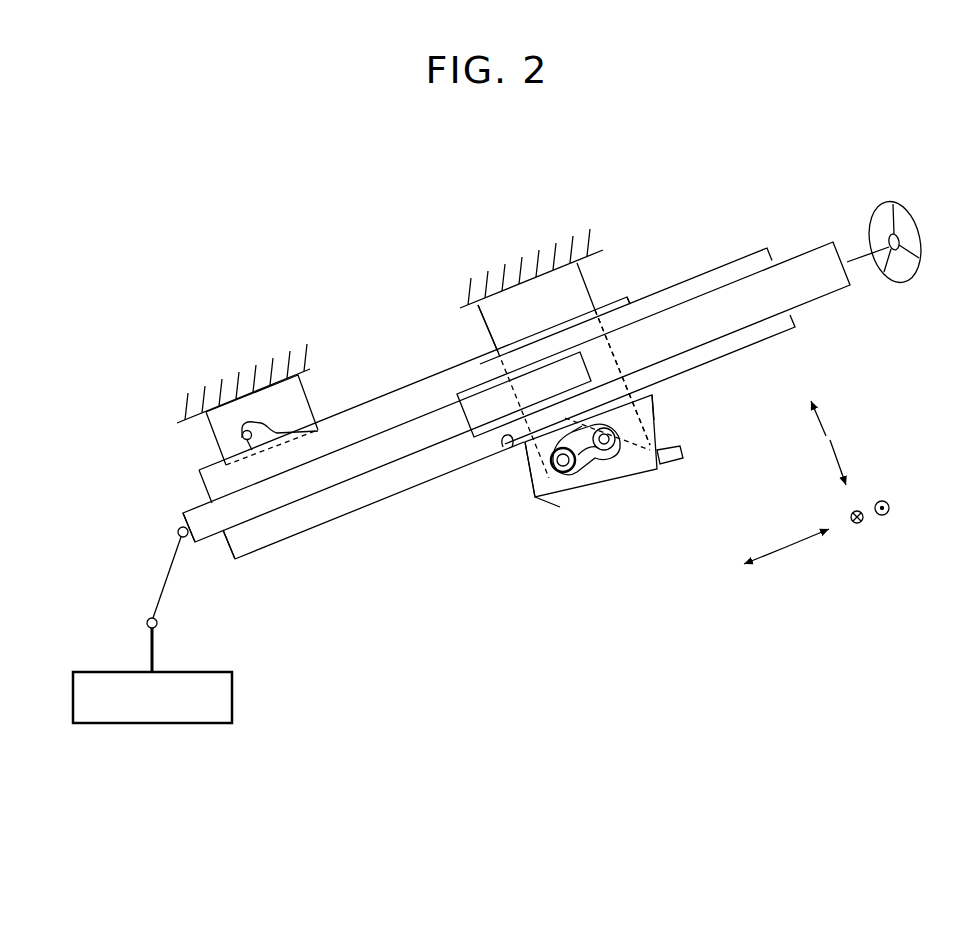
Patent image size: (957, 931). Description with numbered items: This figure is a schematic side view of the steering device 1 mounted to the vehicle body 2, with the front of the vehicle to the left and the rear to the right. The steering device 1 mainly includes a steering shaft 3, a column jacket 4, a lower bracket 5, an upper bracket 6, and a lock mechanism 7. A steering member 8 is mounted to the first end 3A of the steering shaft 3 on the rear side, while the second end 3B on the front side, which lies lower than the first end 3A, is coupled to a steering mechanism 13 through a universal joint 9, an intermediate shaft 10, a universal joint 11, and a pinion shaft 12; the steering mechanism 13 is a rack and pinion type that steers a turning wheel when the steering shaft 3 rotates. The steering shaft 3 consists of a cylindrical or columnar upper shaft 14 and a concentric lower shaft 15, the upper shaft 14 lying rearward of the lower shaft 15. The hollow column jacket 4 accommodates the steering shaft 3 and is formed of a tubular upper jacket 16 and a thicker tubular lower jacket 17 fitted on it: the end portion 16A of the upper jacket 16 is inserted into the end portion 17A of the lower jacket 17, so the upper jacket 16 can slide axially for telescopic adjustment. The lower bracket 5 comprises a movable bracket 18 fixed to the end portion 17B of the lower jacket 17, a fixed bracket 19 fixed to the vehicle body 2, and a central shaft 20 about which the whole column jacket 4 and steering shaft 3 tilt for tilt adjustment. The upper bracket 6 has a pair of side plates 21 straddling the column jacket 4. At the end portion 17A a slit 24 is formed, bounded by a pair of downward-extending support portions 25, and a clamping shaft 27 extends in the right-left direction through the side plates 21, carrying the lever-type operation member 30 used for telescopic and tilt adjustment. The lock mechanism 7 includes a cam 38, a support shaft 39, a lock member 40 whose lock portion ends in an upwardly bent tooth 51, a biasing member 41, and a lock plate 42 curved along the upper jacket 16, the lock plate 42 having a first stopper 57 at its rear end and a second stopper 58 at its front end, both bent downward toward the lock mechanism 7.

The steering device 1 is at (506, 723).
The vehicle body 2 is at (286, 379).
The steering shaft 3 is at (530, 387).
The first end 3A is at (890, 252).
The second end 3B is at (186, 512).
The column jacket 4 is at (495, 424).
The lower bracket 5 is at (265, 418).
The upper bracket 6 is at (549, 409).
The lock mechanism 7 is at (617, 440).
The steering member 8 is at (886, 204).
The universal joint 9 is at (178, 532).
The intermediate shaft 10 is at (167, 577).
The universal joint 11 is at (147, 622).
The pinion shaft 12 is at (155, 652).
The steering mechanism 13 is at (233, 695).
The upper shaft 14 is at (832, 294).
The lower shaft 15 is at (298, 508).
The upper jacket 16 is at (629, 373).
The end portion 16A is at (512, 447).
The lower jacket 17 is at (440, 431).
The end portion 17A is at (624, 298).
The end portion 17B is at (226, 543).
The movable bracket 18 is at (251, 449).
The fixed bracket 19 is at (291, 404).
The central shaft 20 is at (242, 437).
The side plate 21 is at (489, 332).
The slit 24 is at (533, 506).
The support portion 25 is at (531, 494).
The clamping shaft 27 is at (609, 458).
The operation member 30 is at (670, 462).
The cam 38 is at (611, 453).
The support shaft 39 is at (568, 482).
The lock member 40 is at (573, 478).
The biasing member 41 is at (562, 492).
The lock plate 42 is at (632, 398).
The tooth 51 is at (590, 424).
The first stopper 57 is at (656, 403).
The second stopper 58 is at (530, 488).